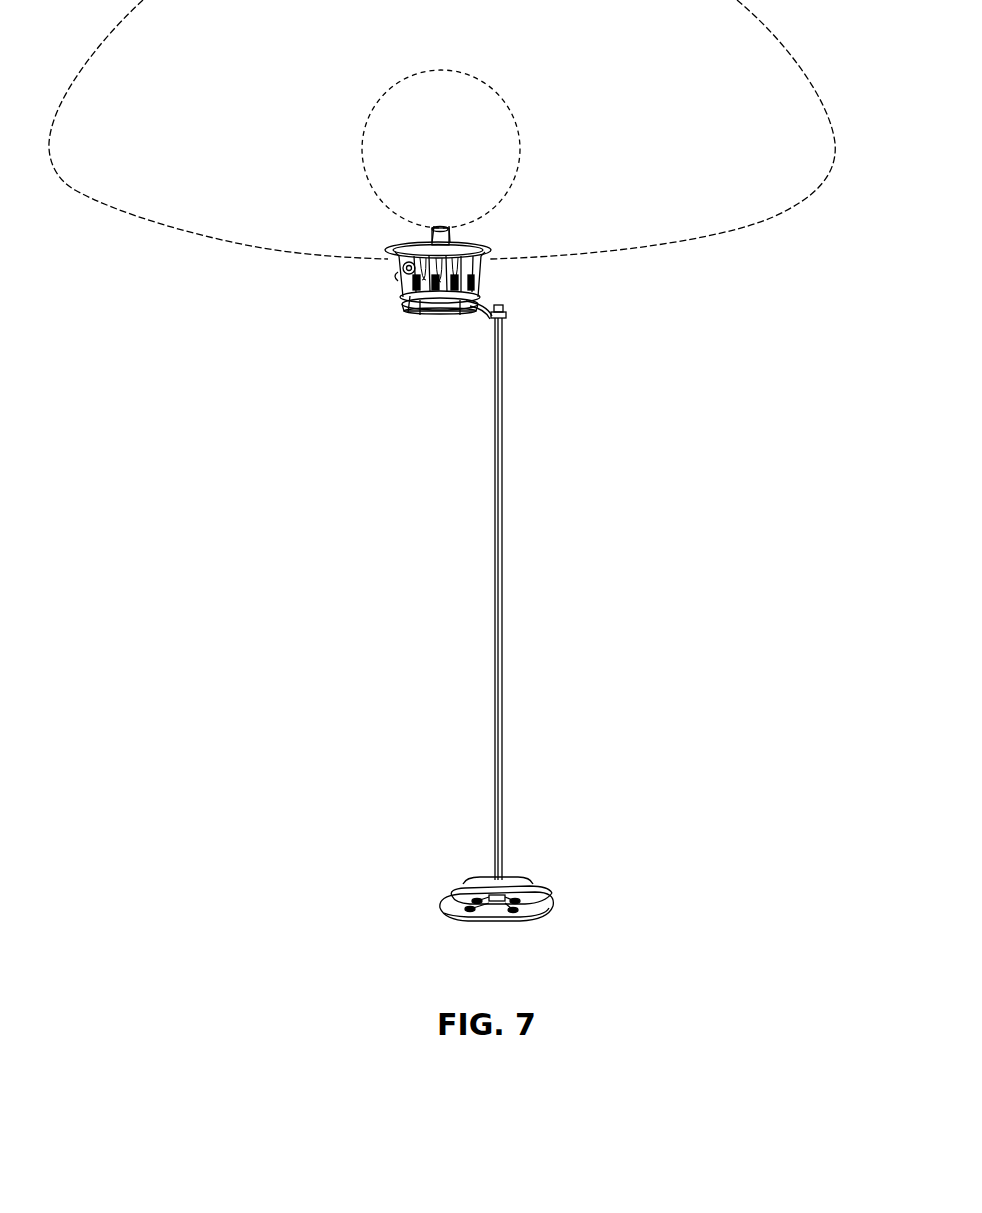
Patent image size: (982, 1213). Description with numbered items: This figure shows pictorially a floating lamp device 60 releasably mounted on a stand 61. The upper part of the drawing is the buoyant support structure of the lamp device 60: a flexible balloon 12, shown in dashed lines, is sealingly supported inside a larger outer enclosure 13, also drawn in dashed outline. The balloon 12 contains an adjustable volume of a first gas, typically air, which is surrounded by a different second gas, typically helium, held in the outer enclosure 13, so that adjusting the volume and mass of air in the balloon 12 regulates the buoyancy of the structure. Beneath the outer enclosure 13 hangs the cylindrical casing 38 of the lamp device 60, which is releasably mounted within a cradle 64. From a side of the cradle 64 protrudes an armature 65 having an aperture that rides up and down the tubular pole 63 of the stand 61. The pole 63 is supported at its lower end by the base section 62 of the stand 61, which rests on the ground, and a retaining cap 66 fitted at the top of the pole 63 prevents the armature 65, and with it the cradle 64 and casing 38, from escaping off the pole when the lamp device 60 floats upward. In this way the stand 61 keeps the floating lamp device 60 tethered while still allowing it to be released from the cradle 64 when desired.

The flexible balloon 12 is at (455, 167).
The outer enclosure 13 is at (731, 131).
The cylindrical casing 38 is at (396, 269).
The floating lamp device 60 is at (663, 250).
The stand 61 is at (600, 949).
The base section 62 is at (533, 878).
The tubular pole 63 is at (500, 490).
The cradle 64 is at (418, 312).
The armature 65 is at (484, 307).
The retaining cap 66 is at (497, 306).